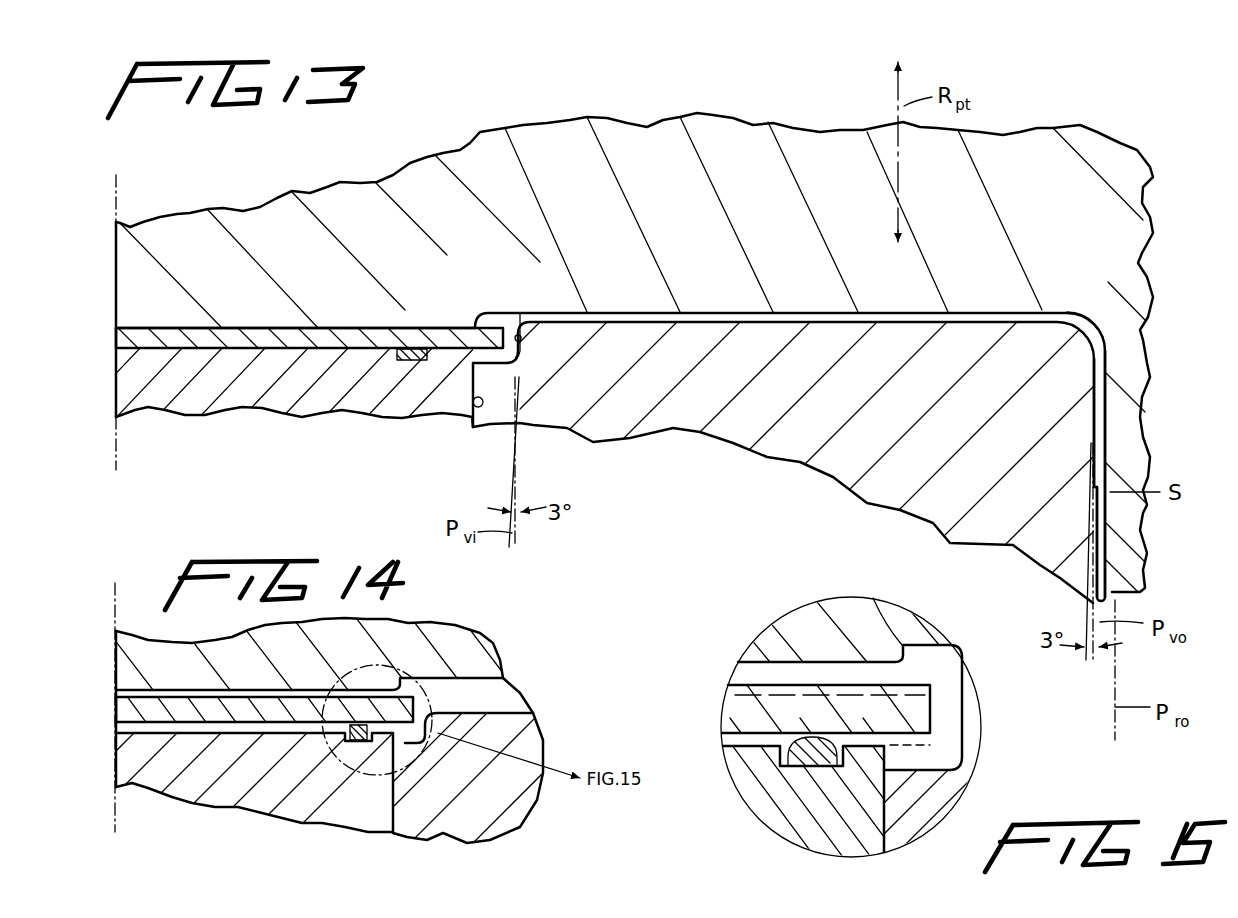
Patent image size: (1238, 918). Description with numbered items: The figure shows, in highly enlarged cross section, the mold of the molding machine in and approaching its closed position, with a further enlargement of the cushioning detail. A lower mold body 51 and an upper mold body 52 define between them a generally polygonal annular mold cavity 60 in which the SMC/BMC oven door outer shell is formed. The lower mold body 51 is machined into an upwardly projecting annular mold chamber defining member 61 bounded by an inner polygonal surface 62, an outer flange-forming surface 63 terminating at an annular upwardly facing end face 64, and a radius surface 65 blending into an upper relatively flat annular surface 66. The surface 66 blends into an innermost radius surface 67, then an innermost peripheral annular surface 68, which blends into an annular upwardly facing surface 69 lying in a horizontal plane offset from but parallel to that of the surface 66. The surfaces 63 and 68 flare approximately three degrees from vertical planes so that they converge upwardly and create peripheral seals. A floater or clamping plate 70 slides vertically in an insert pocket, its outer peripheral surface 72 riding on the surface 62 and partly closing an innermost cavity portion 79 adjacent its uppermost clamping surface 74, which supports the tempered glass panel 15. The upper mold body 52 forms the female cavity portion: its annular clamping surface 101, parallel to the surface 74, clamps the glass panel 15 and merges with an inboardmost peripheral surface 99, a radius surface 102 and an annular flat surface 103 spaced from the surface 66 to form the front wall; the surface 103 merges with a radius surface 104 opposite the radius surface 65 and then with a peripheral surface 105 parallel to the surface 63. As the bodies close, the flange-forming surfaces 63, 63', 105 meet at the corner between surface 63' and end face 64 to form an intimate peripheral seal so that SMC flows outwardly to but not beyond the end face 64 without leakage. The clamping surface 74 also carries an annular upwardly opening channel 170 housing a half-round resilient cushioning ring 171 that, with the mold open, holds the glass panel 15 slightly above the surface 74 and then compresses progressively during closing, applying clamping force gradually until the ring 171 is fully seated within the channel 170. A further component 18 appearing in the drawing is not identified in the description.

In FIG. 13, the tempered glass panel 15 is at (258, 340).
In FIG. 14, the tempered glass panel 15 is at (267, 710).
In FIG. 15, the tempered glass panel 15 is at (805, 682).
In FIG. 13, the seal 18 is at (450, 349).
In FIG. 13, the lower mold body 51 is at (1031, 553).
In FIG. 14, the lower mold body 51 is at (534, 828).
In FIG. 15, the lower mold body 51 is at (913, 842).
In FIG. 13, the upper mold body 52 is at (733, 140).
In FIG. 14, the upper mold body 52 is at (490, 650).
In FIG. 15, the upper mold body 52 is at (918, 622).
In FIG. 13, the annular mold cavity 60 is at (690, 311).
In FIG. 14, the annular mold cavity 60 is at (504, 701).
In FIG. 15, the annular mold cavity 60 is at (970, 678).
In FIG. 13, the mold chamber defining member 61 is at (732, 441).
In FIG. 14, the mold chamber defining member 61 is at (448, 827).
In FIG. 15, the mold chamber defining member 61 is at (934, 824).
In FIG. 13, the inner polygonal surface 62 is at (470, 408).
In FIG. 15, the inner polygonal surface 62 is at (888, 830).
In FIG. 13, the outer polygonal flange-forming surface 63 is at (1071, 423).
In FIG. 13, the flange-forming surface 63' is at (1152, 542).
In FIG. 13, the annular upwardly facing end face 64 is at (1107, 470).
In FIG. 13, the radius surface 65 is at (1082, 333).
In FIG. 13, the upper relatively flat annular surface 66 is at (827, 325).
In FIG. 15, the upper relatively flat annular surface 66 is at (966, 706).
In FIG. 13, the innermost radius surface 67 is at (521, 316).
In FIG. 15, the innermost radius surface 67 is at (966, 739).
In FIG. 13, the innermost peripheral annular surface 68 is at (522, 338).
In FIG. 15, the innermost peripheral annular surface 68 is at (958, 760).
In FIG. 13, the annular upwardly facing surface 69 is at (520, 368).
In FIG. 15, the annular upwardly facing surface 69 is at (936, 772).
In FIG. 13, the floater 70 is at (322, 420).
In FIG. 14, the floater 70 is at (318, 822).
In FIG. 15, the floater 70 is at (800, 853).
In FIG. 13, the outer peripheral surface 72 is at (483, 423).
In FIG. 15, the outer peripheral surface 72 is at (890, 823).
In FIG. 13, the clamping surface 74 is at (315, 347).
In FIG. 14, the clamping surface 74 is at (225, 734).
In FIG. 15, the clamping surface 74 is at (748, 748).
In FIG. 13, the innermost chamber portion 79 is at (495, 310).
In FIG. 13, the inboardmost peripheral surface 99 is at (472, 318).
In FIG. 15, the inboardmost peripheral surface 99 is at (903, 652).
In FIG. 13, the clamping surface 101 is at (338, 330).
In FIG. 14, the clamping surface 101 is at (228, 688).
In FIG. 13, the radius surface 102 is at (478, 310).
In FIG. 15, the radius surface 102 is at (870, 597).
In FIG. 13, the annular relatively flat surface 103 is at (775, 312).
In FIG. 15, the annular relatively flat surface 103 is at (952, 647).
In FIG. 13, the radius surface 104 is at (1077, 311).
In FIG. 13, the peripheral surface 105 is at (1104, 392).
In FIG. 14, the annular upwardly opening channel 170 is at (356, 743).
In FIG. 15, the annular upwardly opening channel 170 is at (826, 770).
In FIG. 14, the cushioning ring 171 is at (343, 746).
In FIG. 15, the cushioning ring 171 is at (808, 770).